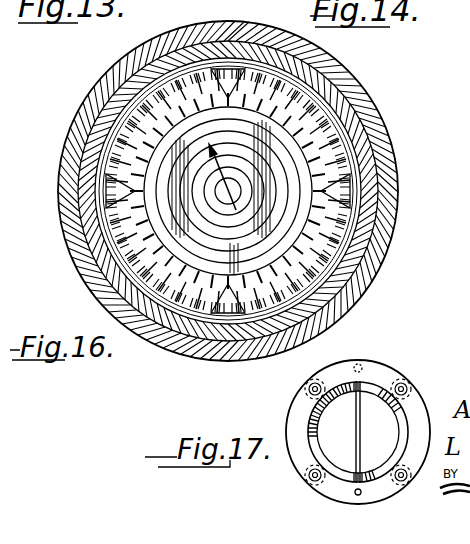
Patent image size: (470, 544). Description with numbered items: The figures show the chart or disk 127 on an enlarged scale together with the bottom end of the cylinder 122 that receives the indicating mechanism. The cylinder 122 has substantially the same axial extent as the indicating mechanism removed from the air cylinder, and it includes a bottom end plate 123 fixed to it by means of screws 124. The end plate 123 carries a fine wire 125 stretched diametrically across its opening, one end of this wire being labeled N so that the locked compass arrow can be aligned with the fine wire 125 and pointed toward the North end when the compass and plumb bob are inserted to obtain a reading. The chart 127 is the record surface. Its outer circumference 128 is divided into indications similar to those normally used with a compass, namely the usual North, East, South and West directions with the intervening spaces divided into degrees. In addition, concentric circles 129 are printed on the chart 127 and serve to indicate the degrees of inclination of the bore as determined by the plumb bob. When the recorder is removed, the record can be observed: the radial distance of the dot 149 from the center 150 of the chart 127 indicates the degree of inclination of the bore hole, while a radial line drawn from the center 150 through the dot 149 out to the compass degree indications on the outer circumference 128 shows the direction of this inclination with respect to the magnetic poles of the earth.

In FIG. 16, the cylinder 122 is at (363, 107).
In FIG. 16, the outer circumference of the chart 128 is at (283, 78).
In FIG. 16, the chart 127 is at (112, 136).
In FIG. 16, the concentric circles 129 is at (295, 167).
In FIG. 16, the center of the chart 150 is at (228, 191).
In FIG. 16, the dot 149 is at (213, 150).
In FIG. 17, the bottom end plate 123 is at (302, 410).
In FIG. 17, the screws 124 is at (408, 388).
In FIG. 17, the fine wire 125 is at (363, 402).